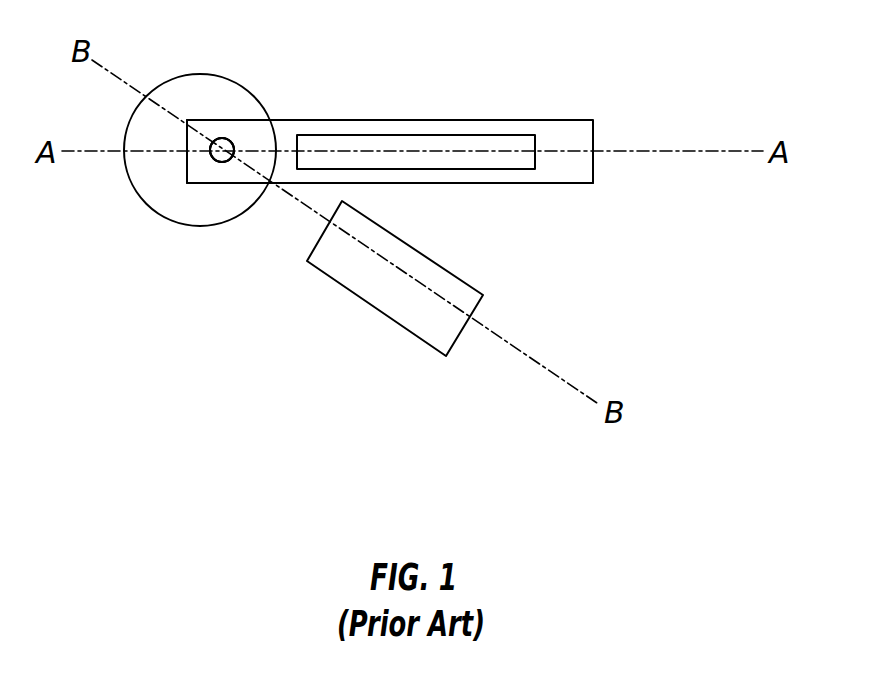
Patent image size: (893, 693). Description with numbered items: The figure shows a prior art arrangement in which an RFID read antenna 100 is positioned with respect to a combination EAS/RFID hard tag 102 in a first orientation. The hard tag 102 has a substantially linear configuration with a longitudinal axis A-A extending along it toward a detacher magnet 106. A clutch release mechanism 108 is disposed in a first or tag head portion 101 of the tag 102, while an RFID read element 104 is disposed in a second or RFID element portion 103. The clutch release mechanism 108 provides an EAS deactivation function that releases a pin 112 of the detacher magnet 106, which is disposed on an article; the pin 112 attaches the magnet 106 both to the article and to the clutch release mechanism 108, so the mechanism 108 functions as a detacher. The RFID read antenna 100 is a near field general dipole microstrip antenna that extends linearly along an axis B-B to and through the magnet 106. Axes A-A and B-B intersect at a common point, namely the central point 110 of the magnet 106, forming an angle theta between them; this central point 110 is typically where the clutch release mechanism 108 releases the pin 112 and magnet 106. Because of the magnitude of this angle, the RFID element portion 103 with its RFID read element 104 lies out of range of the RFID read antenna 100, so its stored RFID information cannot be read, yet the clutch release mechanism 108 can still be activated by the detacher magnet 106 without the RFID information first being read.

The RFID read antenna 100 is at (377, 308).
The tag head portion 101 is at (253, 118).
The combination EAS/RFID hard tag 102 is at (548, 185).
The RFID element portion 103 is at (563, 121).
The RFID read element 104 is at (400, 135).
The detacher magnet 106 is at (192, 72).
The clutch release mechanism 108 is at (222, 153).
The central point 110 is at (226, 138).
The pin 112 is at (221, 152).